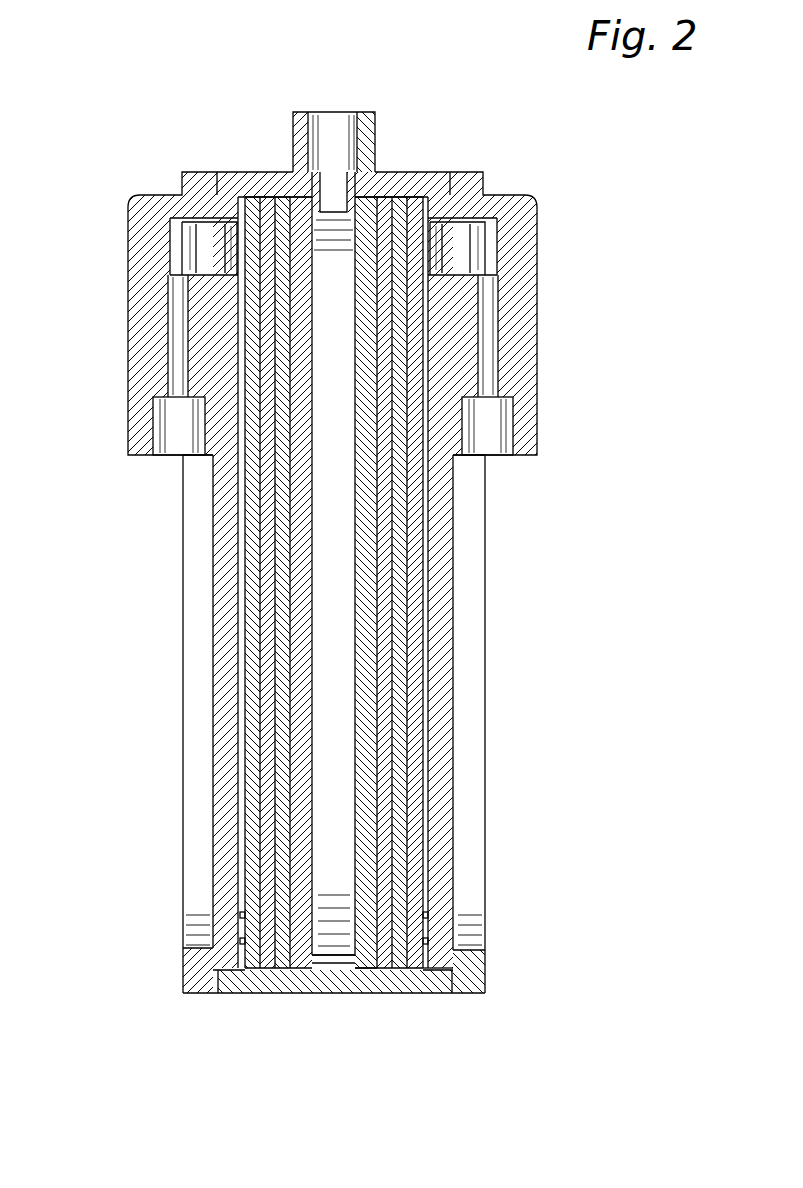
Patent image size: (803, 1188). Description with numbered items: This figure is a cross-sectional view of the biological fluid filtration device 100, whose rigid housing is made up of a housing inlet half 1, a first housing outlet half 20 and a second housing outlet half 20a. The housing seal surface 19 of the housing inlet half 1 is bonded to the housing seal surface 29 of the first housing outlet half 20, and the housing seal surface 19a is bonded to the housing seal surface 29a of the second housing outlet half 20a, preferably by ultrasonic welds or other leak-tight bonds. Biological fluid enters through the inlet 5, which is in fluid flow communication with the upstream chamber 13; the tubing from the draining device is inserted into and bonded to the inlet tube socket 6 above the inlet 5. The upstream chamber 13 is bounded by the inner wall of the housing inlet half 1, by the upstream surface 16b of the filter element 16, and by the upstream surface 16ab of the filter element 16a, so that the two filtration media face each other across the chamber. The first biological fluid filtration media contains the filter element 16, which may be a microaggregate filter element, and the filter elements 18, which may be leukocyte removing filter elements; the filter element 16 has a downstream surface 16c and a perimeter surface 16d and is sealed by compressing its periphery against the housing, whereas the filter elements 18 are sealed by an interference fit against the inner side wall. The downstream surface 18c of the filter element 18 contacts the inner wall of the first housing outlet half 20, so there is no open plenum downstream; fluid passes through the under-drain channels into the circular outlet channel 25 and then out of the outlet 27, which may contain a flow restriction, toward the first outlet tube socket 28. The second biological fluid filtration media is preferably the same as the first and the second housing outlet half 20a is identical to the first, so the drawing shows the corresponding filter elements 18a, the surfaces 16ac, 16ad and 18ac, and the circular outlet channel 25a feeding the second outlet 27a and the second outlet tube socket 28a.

The housing inlet half 1 is at (422, 983).
The inlet 5 is at (337, 190).
The inlet tube socket 6 is at (335, 130).
The upstream chamber 13 is at (335, 883).
The filter element 16 is at (298, 462).
The filter element 16a is at (370, 715).
The upstream surface 16ab is at (372, 686).
The inner tube wall 16ac is at (377, 602).
The inner tube bottom end 16ad is at (365, 962).
The upstream surface 16b is at (310, 738).
The downstream surface 16c is at (290, 815).
The perimeter surface 16d is at (302, 200).
The filter elements 18 is at (282, 545).
The inner tube layer 18a is at (385, 767).
The right wall layer 18ac is at (423, 513).
The downstream surface 18c is at (240, 870).
The housing seal surface 19 is at (217, 178).
The housing seal surface 19a is at (457, 182).
The first housing outlet half 20 is at (198, 987).
The second housing outlet half 20a is at (473, 980).
The circular outlet channel 25 is at (195, 250).
The bolt head 25a is at (465, 245).
The outlet 27 is at (175, 333).
The second outlet 27a is at (488, 337).
The first outlet tube socket 28 is at (173, 430).
The second outlet tube socket 28a is at (490, 440).
The housing seal surface 29 is at (237, 993).
The housing seal surface 29a is at (452, 983).
The biological fluid filtration device 100 is at (630, 600).